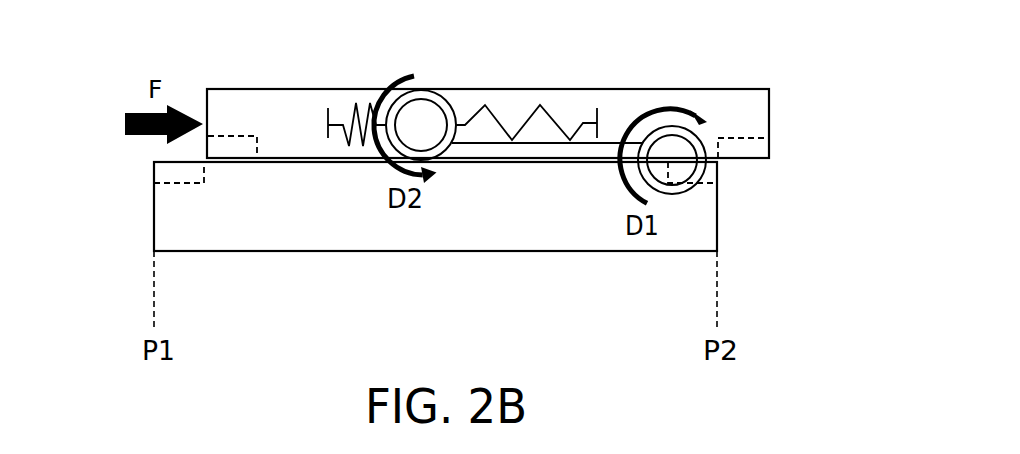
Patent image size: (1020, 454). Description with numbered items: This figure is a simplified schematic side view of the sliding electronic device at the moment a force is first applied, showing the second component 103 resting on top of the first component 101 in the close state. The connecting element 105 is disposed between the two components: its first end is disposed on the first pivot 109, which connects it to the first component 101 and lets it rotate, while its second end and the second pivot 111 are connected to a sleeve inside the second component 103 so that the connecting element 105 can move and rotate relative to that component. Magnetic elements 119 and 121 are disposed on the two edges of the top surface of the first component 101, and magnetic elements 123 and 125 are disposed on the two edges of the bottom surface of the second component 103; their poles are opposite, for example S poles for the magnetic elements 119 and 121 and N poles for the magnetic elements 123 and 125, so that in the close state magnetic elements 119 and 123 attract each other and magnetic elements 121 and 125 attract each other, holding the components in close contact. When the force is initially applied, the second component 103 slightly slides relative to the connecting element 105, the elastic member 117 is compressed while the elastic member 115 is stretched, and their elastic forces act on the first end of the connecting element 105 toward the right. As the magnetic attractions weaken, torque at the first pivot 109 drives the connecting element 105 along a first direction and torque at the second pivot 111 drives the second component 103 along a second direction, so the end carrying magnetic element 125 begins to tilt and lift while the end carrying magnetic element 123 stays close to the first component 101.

The first component 101 is at (435, 253).
The second component 103 is at (302, 88).
The connecting element 105 is at (560, 148).
The first pivot 109 is at (660, 177).
The second pivot 111 is at (428, 108).
The elastic member 115 is at (487, 105).
The elastic member 117 is at (353, 105).
The magnetic element 119 is at (155, 167).
The magnetic element 121 is at (717, 177).
The magnetic element 123 is at (226, 143).
The magnetic element 125 is at (770, 138).